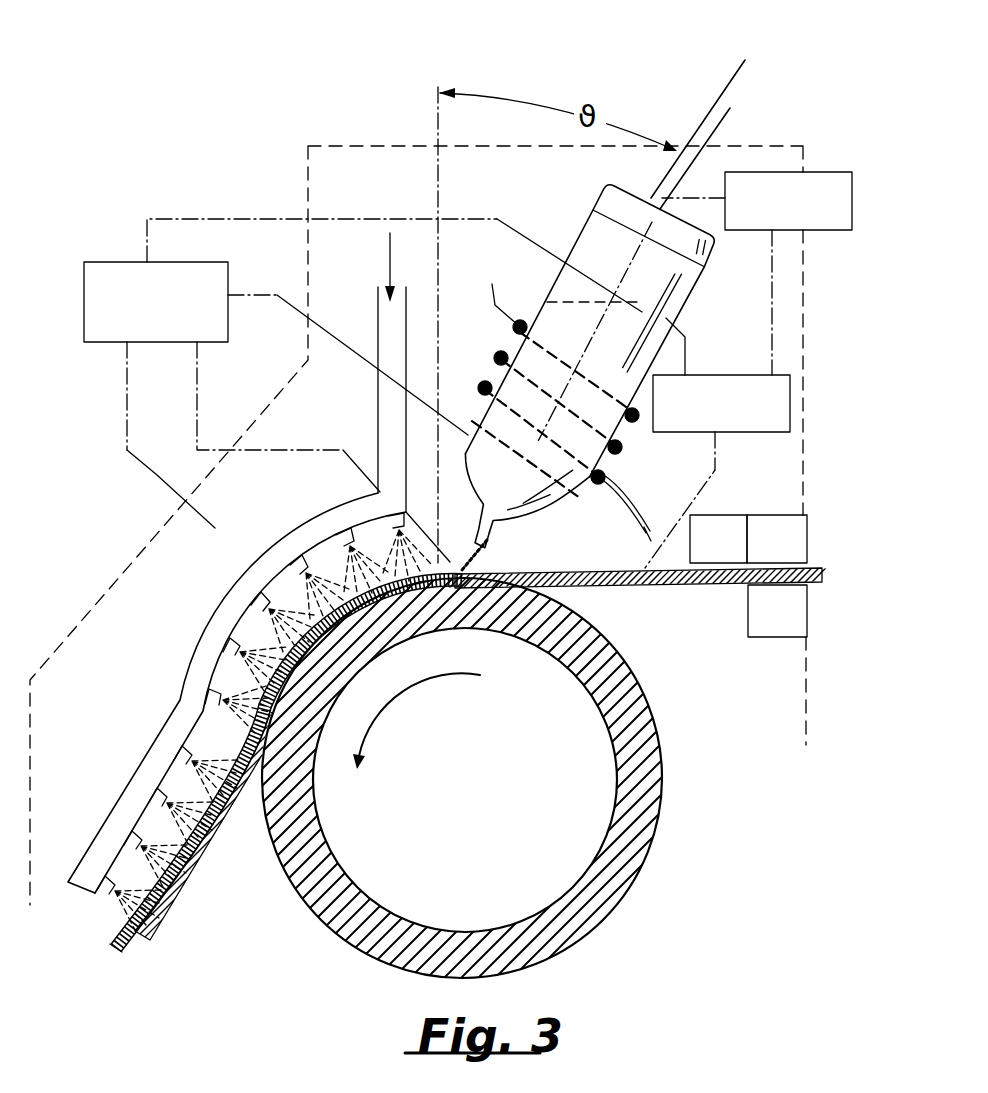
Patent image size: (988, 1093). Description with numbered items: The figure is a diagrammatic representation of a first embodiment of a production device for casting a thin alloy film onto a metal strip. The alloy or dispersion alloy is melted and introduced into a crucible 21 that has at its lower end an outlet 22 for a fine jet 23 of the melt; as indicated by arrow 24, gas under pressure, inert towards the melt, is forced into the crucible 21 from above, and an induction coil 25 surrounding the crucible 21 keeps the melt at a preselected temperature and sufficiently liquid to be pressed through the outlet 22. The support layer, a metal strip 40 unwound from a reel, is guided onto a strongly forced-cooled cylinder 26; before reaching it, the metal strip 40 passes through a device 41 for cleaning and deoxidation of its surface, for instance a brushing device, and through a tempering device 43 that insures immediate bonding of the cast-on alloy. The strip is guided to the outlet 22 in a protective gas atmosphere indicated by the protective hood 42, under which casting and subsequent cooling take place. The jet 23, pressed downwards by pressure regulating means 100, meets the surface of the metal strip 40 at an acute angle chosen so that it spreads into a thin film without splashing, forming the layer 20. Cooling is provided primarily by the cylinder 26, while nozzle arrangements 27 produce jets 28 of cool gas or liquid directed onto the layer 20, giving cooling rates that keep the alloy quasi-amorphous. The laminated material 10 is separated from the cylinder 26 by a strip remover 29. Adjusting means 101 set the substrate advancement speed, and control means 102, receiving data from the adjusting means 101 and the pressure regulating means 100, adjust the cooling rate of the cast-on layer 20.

The laminated material 10 is at (137, 953).
The layer 20 is at (265, 566).
The crucible 21 is at (670, 278).
The outlet 22 is at (492, 540).
The jet 23 is at (462, 568).
The arrow 24 is at (720, 100).
The induction coil 25 is at (616, 448).
The cylinder 26 is at (655, 766).
The nozzle arrangements 27 is at (232, 598).
The jets 28 is at (352, 577).
The strip remover 29 is at (208, 890).
The metal strip 40 is at (656, 584).
The device for cleaning and deoxidation 41 is at (731, 557).
The protective hood 42 is at (326, 144).
The tempering device 43 is at (790, 557).
The pressure regulating means 100 is at (740, 230).
The adjusting means 101 is at (768, 432).
The control means 102 is at (100, 262).